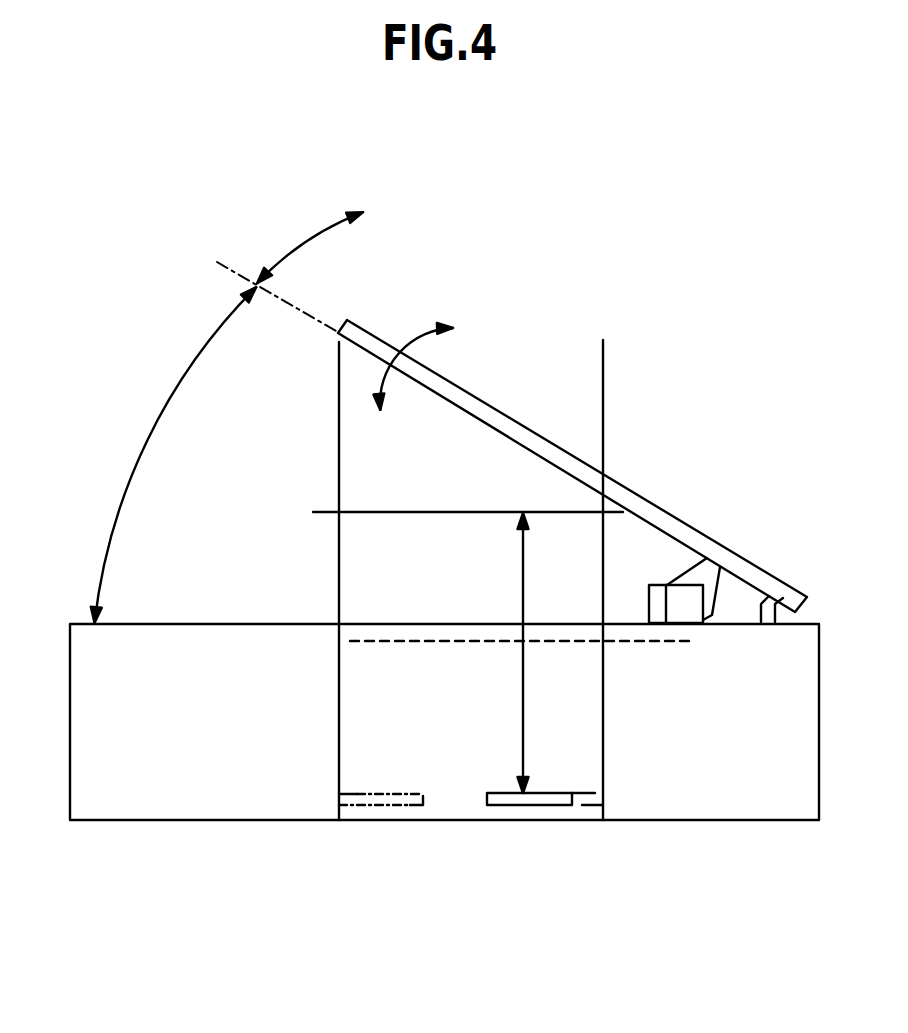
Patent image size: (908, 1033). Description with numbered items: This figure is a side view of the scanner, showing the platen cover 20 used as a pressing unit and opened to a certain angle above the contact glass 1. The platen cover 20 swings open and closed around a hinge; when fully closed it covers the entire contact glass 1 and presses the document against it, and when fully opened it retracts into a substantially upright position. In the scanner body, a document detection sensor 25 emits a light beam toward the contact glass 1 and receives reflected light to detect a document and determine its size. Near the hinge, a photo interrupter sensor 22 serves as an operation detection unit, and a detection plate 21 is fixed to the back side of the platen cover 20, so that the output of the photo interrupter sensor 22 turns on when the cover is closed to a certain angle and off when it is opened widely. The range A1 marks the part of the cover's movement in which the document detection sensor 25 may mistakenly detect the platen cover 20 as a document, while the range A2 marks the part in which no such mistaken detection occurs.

The contact glass 1 is at (382, 643).
The platen cover 20 is at (653, 513).
The detection plate 21 is at (707, 568).
The photo interrupter sensor 22 is at (682, 612).
The document detection sensor 25 is at (473, 820).
The detectable range A1 is at (173, 455).
The undetectable range A2 is at (332, 238).